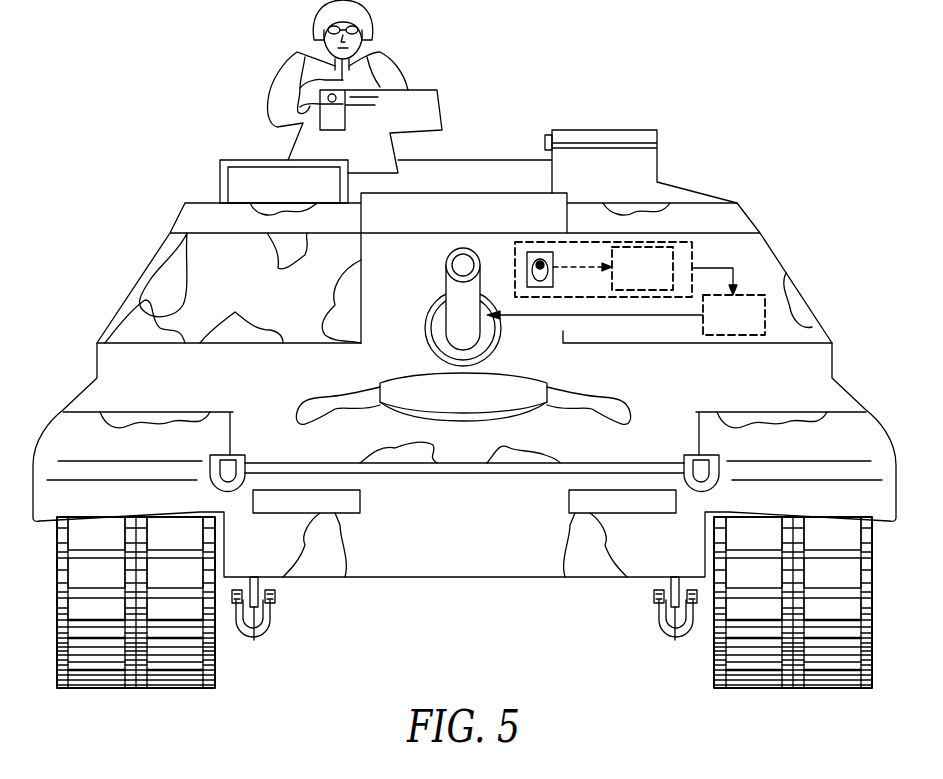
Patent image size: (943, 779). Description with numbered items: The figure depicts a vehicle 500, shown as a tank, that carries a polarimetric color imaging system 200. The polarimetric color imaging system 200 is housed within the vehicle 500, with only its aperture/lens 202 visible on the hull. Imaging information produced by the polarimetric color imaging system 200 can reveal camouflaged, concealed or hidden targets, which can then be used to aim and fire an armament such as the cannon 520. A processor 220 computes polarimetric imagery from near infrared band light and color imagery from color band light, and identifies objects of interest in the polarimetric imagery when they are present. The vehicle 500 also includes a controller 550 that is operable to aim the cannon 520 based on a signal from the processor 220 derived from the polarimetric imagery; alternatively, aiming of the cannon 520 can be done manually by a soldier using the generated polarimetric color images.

The vehicle 500 is at (143, 153).
The cannon 520 is at (446, 283).
The polarimetric color imaging system 200 is at (692, 251).
The aperture/lens 202 is at (533, 252).
The processor 220 is at (642, 268).
The controller 550 is at (734, 315).